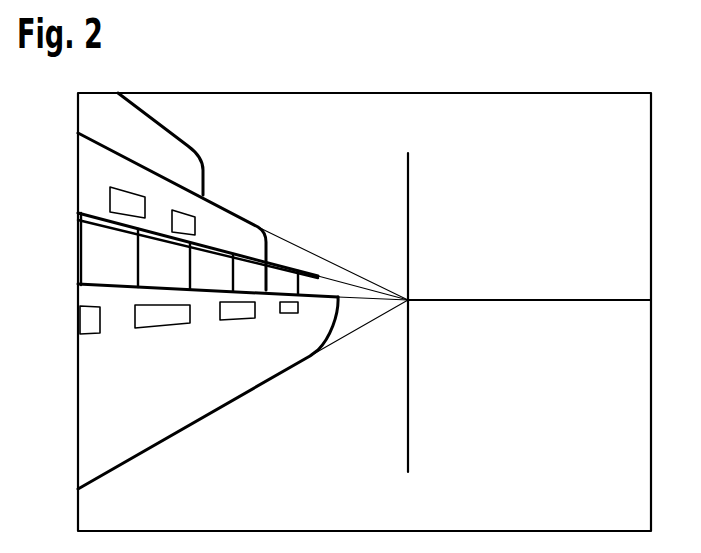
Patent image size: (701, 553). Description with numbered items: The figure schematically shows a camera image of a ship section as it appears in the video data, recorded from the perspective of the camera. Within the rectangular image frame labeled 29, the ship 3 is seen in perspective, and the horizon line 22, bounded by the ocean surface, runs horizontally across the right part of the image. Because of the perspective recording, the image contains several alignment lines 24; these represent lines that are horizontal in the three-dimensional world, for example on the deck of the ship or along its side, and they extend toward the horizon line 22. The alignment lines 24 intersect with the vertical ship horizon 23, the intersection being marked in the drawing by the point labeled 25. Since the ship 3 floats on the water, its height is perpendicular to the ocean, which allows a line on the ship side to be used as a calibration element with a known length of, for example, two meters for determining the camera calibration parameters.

The ship 3 is at (203, 168).
The horizon line 22 is at (527, 300).
The ship horizon 23 is at (409, 440).
The alignment lines 24 is at (336, 281).
The vanishing point 25 is at (408, 300).
The camera image frame 29 is at (508, 93).